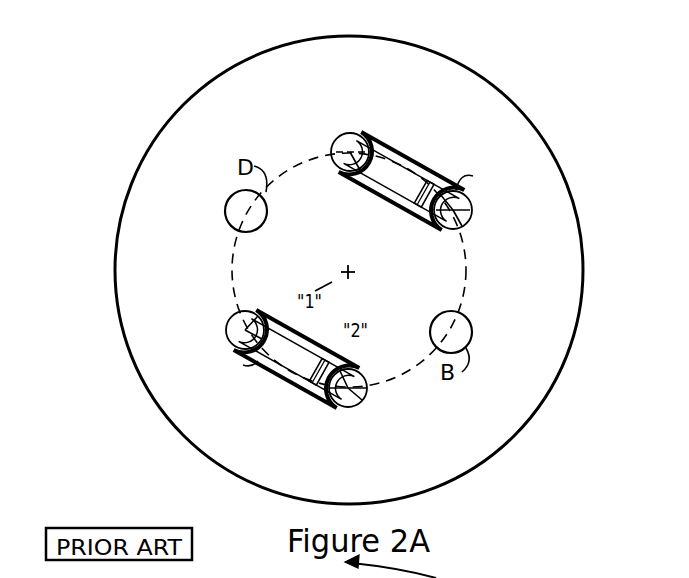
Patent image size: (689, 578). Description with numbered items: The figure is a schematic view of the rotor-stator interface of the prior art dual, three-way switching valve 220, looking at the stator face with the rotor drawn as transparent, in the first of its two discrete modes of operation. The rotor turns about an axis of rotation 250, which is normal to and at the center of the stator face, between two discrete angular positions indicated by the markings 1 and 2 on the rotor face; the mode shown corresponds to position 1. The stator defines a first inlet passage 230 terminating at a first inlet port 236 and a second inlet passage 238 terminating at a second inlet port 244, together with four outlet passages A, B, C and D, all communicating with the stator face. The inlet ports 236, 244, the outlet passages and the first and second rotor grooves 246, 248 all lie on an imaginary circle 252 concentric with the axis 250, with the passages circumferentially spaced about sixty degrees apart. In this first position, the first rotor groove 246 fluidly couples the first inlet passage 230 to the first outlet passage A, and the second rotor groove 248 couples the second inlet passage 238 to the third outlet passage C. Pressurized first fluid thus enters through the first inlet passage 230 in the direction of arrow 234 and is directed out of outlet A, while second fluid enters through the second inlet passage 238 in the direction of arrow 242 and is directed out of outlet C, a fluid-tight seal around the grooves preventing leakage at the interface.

The marking for first discrete angular position 1 is at (567, 144).
The marking for second discrete angular position 2 is at (350, 36).
The valve 220 is at (550, 90).
The first inlet passage 230 is at (318, 380).
The arrow 234 is at (300, 382).
The first inlet port 236 is at (352, 410).
The second inlet passage 238 is at (394, 161).
The arrow 242 is at (410, 163).
The second inlet port 244 is at (347, 129).
The first rotor groove 246 is at (338, 409).
The second rotor groove 248 is at (427, 179).
The axis of rotation 250 is at (356, 272).
The imaginary circle 252 is at (466, 284).